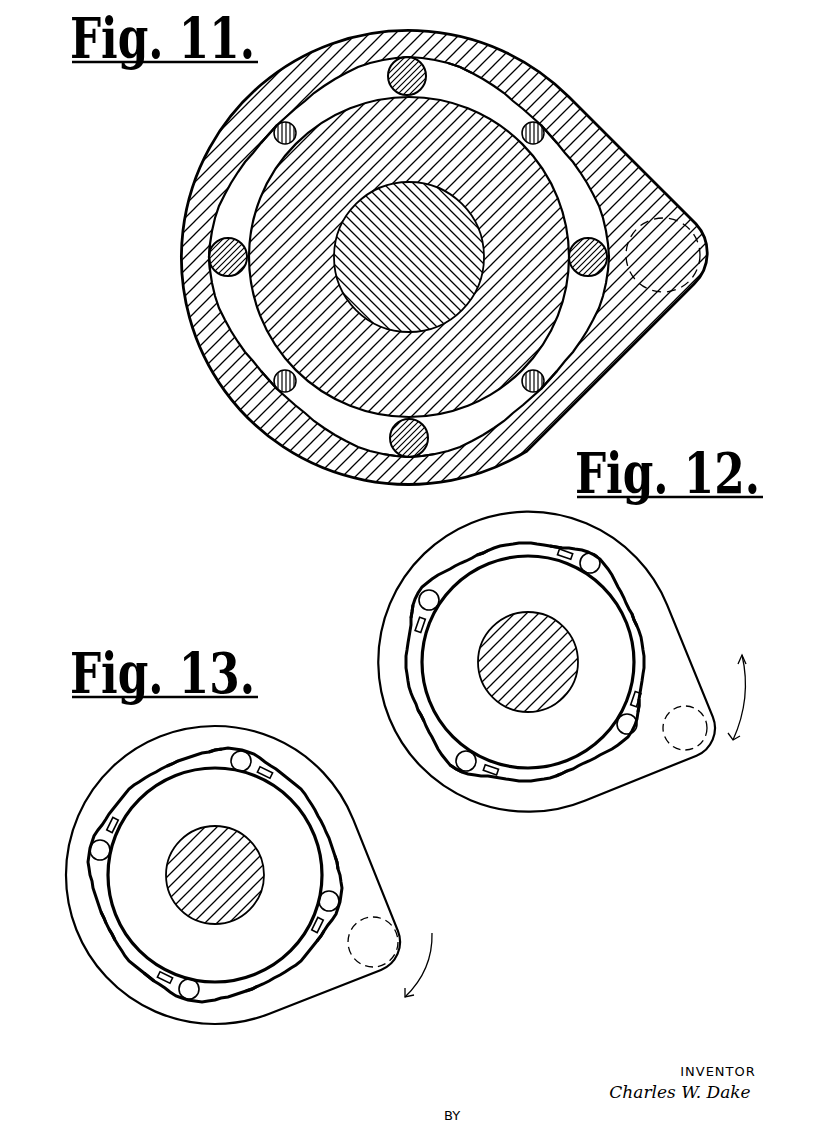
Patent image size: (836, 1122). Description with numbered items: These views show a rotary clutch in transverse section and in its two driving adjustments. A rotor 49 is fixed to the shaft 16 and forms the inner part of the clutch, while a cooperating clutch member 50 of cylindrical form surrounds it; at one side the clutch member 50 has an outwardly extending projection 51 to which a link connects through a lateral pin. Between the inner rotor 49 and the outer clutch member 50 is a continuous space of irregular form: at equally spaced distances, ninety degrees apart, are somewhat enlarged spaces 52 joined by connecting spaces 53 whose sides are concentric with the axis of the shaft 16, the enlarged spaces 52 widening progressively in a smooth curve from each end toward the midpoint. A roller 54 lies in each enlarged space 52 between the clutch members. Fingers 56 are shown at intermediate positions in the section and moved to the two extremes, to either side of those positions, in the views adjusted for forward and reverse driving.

In FIG. 11, the shaft 16 is at (458, 284).
In FIG. 12, the shaft 16 is at (532, 702).
In FIG. 13, the shaft 16 is at (250, 866).
In FIG. 11, the rotor 49 is at (352, 395).
In FIG. 12, the rotor 49 is at (438, 676).
In FIG. 13, the rotor 49 is at (138, 925).
In FIG. 11, the clutch member 50 is at (265, 418).
In FIG. 12, the clutch member 50 is at (554, 800).
In FIG. 13, the clutch member 50 is at (226, 740).
In FIG. 11, the projection 51 is at (645, 327).
In FIG. 12, the projection 51 is at (706, 700).
In FIG. 13, the projection 51 is at (380, 905).
In FIG. 11, the enlarged spaces 52 is at (455, 80).
In FIG. 12, the enlarged spaces 52 is at (555, 540).
In FIG. 13, the enlarged spaces 52 is at (217, 750).
In FIG. 11, the connecting spaces 53 is at (548, 150).
In FIG. 12, the connecting spaces 53 is at (488, 550).
In FIG. 13, the connecting spaces 53 is at (175, 768).
In FIG. 11, the roller 54 is at (390, 78).
In FIG. 12, the roller 54 is at (600, 566).
In FIG. 13, the roller 54 is at (246, 760).
In FIG. 11, the fingers 56 is at (285, 128).
In FIG. 12, the fingers 56 is at (574, 548).
In FIG. 13, the fingers 56 is at (118, 827).